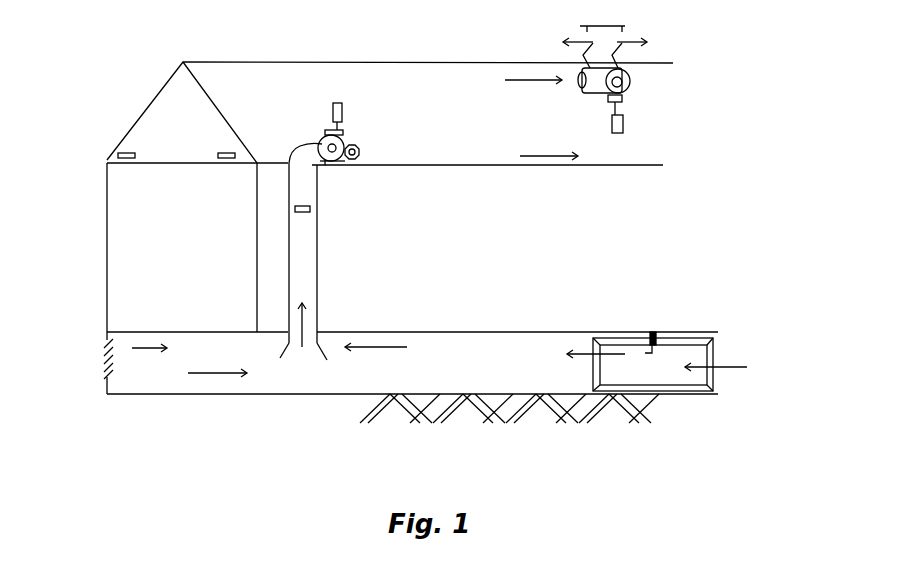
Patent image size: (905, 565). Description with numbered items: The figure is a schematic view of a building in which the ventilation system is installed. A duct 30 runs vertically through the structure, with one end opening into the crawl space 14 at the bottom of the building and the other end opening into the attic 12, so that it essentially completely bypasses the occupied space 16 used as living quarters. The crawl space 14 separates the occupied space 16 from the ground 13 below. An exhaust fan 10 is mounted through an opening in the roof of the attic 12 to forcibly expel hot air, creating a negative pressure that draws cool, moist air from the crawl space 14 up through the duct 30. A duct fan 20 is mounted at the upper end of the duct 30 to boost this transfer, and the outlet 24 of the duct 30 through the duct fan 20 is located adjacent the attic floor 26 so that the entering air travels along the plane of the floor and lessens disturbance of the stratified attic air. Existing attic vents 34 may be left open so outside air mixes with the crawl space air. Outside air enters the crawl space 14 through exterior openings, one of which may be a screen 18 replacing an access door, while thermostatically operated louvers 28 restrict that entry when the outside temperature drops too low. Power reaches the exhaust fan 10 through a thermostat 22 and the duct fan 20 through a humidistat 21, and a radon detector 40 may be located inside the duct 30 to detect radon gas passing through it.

The exhaust fan 10 is at (630, 85).
The attic 12 is at (295, 73).
The ground 13 is at (415, 430).
The crawl space 14 is at (243, 388).
The occupied space 16 is at (125, 213).
The screen 18 is at (667, 370).
The duct fan 20 is at (320, 135).
The humidistat 21 is at (347, 110).
The thermostat 22 is at (625, 125).
The outlet 24 is at (358, 142).
The attic floor 26 is at (467, 163).
The thermostatically operated louvers 28 is at (102, 347).
The duct 30 is at (322, 263).
The attic vents 34 is at (222, 148).
The radon detector 40 is at (330, 196).